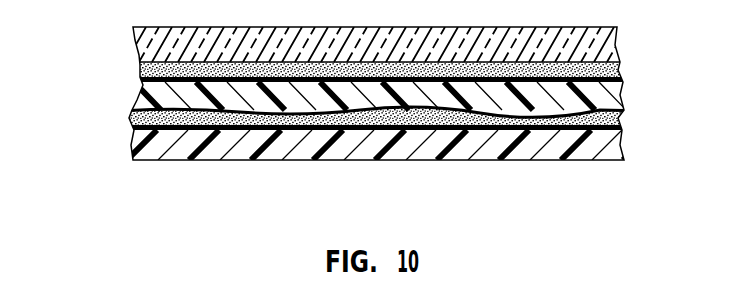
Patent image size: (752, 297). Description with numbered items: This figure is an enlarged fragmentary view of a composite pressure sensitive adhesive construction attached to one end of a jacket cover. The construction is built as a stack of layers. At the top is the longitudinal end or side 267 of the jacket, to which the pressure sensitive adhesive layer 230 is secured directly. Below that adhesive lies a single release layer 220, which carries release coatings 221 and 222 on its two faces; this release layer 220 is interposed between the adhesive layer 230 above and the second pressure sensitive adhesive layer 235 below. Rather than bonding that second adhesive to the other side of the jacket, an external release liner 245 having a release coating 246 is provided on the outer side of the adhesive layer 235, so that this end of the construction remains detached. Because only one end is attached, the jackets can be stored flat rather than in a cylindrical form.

The longitudinal end or side 267 is at (148, 45).
The release coating 221 is at (143, 72).
The release layer 220 is at (147, 95).
The release coating 222 is at (145, 112).
The release coating 246 is at (145, 126).
The external release liner 245 is at (155, 147).
The pressure sensitive adhesive layer 230 is at (622, 73).
The pressure sensitive adhesive layer 235 is at (623, 123).